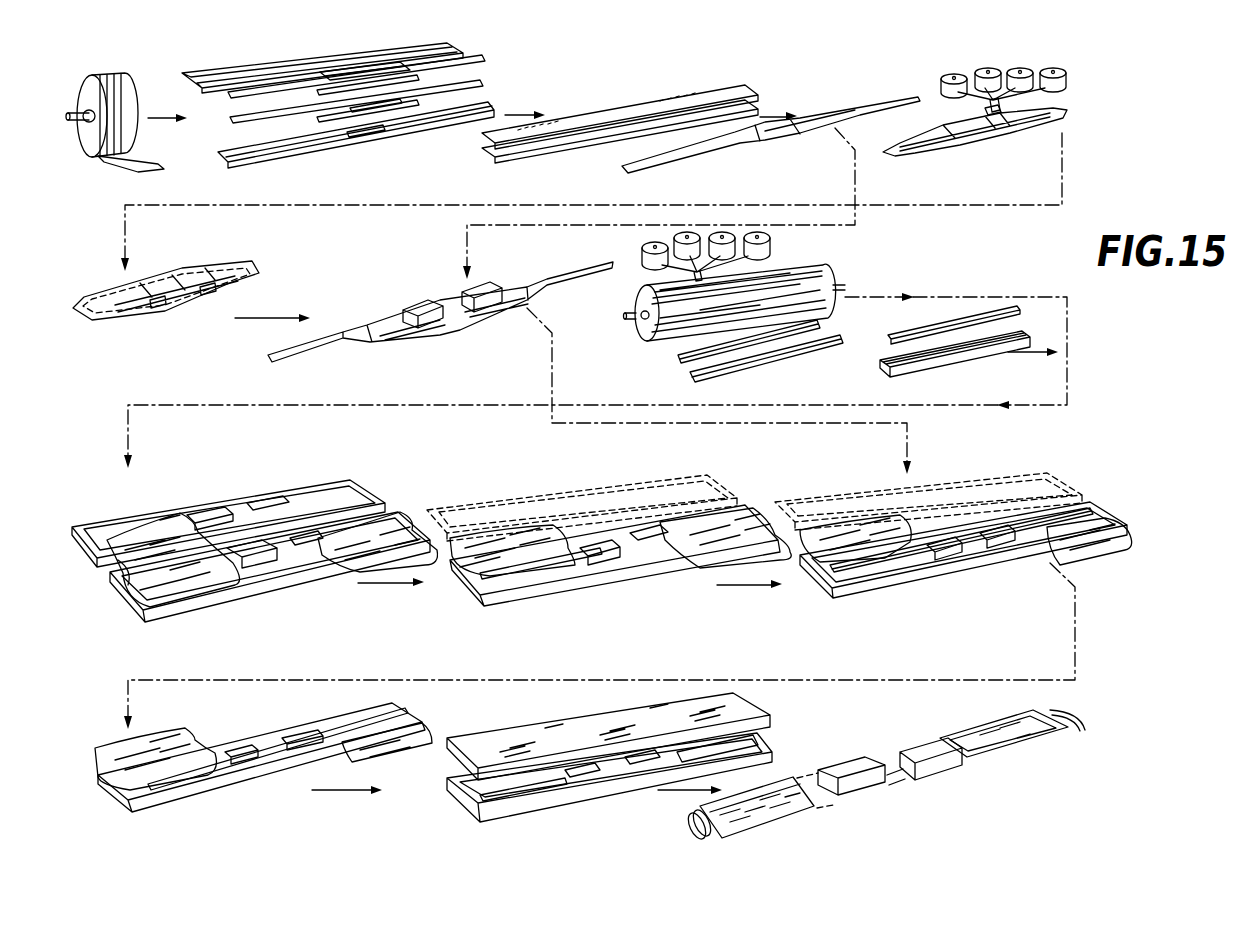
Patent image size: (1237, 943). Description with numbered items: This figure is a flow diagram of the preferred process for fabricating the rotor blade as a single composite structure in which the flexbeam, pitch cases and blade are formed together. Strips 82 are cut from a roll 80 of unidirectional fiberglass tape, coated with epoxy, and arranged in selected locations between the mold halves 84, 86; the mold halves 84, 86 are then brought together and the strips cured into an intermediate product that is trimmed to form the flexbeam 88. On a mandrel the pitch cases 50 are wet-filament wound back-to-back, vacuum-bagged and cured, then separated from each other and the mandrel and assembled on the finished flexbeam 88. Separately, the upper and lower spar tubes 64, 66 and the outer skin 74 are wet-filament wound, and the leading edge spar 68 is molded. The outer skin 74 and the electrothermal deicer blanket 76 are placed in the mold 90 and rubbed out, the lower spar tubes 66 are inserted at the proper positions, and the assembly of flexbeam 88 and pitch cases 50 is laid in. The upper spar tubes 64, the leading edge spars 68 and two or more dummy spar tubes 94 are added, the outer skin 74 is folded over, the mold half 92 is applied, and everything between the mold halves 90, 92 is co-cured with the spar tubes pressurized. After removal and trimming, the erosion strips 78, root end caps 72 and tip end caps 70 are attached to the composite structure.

The pitch cases 50 is at (997, 142).
The upper spar tubes 64 is at (678, 358).
The lower spar tubes 66 is at (691, 379).
The leading edge spar 68 is at (950, 318).
The tip end caps 70 is at (692, 828).
The root end caps 72 is at (853, 793).
The outer skin 74 is at (212, 587).
The electrothermal deicer blanket 76 is at (150, 586).
The erosion strips 78 is at (1020, 748).
The roll 80 is at (117, 78).
The strips 82 is at (229, 92).
The mold half 84 is at (457, 46).
The mold half 86 is at (491, 110).
The flexbeam 88 is at (850, 110).
The mold 90 is at (1030, 96).
The mold half 92 is at (226, 268).
The dummy spar tubes 94 is at (147, 812).